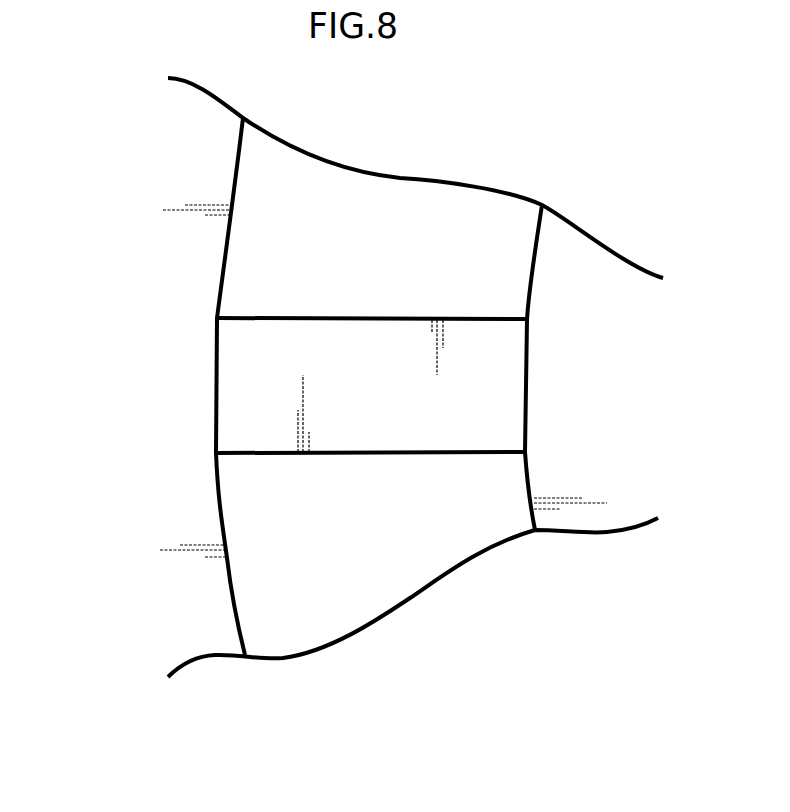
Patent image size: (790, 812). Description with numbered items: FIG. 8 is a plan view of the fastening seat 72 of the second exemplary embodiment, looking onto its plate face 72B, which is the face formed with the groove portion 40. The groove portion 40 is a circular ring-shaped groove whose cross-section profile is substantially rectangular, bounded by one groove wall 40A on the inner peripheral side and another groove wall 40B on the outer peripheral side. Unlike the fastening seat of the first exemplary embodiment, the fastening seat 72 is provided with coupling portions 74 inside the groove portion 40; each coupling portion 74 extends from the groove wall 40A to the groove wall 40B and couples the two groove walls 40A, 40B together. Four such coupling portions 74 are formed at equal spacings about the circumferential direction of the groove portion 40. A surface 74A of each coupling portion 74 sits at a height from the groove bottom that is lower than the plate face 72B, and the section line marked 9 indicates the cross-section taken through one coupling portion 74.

The groove portion 40 is at (480, 222).
The groove wall 40A is at (533, 272).
The groove wall 40B is at (233, 188).
The coupling portion 74 is at (426, 455).
The surface of coupling portion 74A is at (468, 345).
The plate face 72B is at (413, 625).
The fastening seat 72 is at (203, 598).
The section line 9 is at (170, 387).